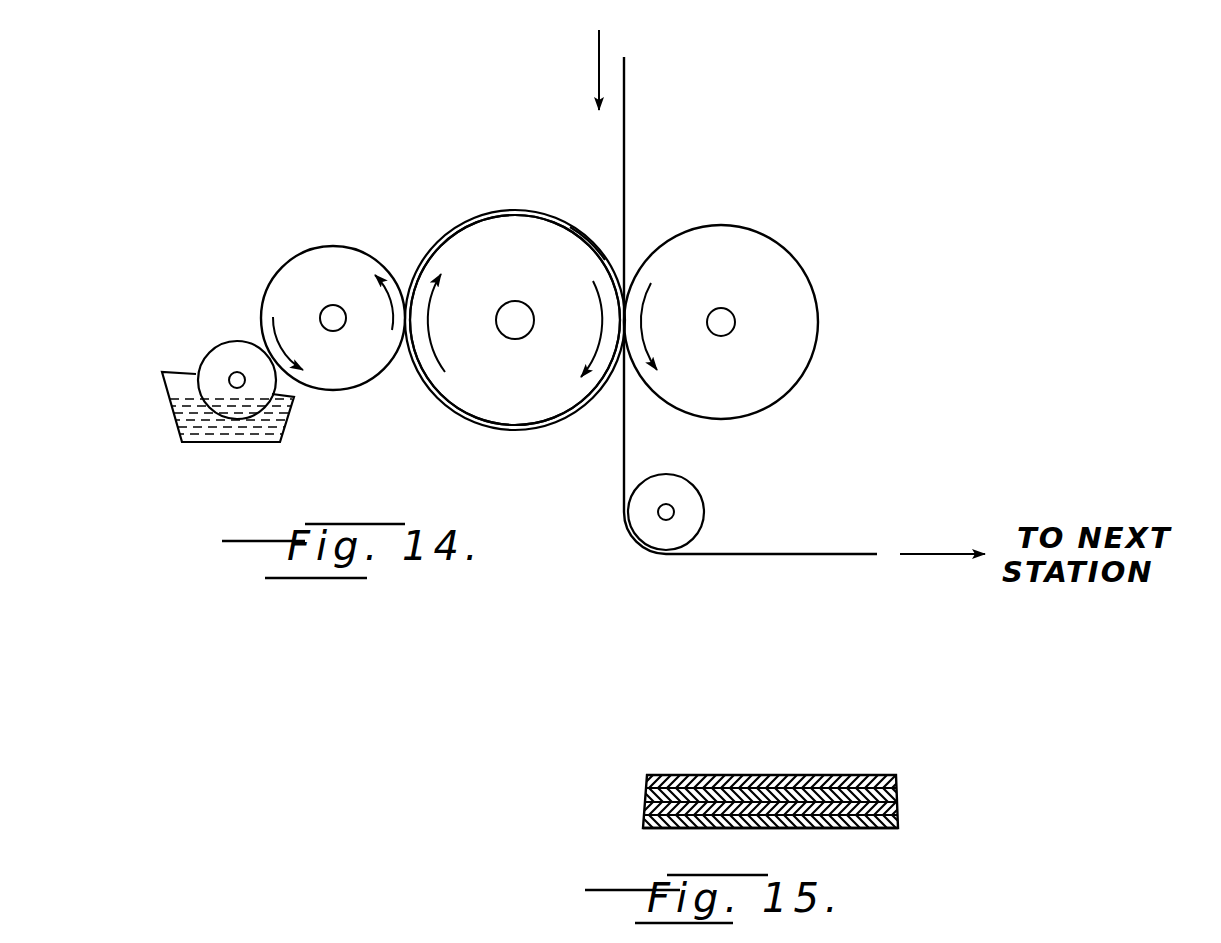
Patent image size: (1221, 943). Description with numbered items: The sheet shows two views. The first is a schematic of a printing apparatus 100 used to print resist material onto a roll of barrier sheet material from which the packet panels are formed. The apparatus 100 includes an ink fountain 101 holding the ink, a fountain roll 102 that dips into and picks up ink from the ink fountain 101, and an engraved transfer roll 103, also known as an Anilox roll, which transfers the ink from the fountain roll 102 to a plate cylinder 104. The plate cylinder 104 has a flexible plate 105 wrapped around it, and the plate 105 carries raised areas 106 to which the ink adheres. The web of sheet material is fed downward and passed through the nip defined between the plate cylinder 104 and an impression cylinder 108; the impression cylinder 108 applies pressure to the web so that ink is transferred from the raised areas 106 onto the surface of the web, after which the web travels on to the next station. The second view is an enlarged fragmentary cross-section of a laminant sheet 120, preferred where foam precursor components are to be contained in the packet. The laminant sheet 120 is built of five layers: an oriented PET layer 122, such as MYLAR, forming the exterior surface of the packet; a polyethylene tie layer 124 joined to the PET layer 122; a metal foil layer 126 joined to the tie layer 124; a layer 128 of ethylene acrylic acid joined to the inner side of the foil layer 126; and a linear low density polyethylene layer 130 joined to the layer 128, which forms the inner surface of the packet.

In FIG. 14, the printing apparatus 100 is at (407, 250).
In FIG. 14, the ink fountain 101 is at (173, 398).
In FIG. 14, the fountain roll 102 is at (217, 357).
In FIG. 14, the engraved transfer roll 103 is at (293, 270).
In FIG. 14, the plate cylinder 104 is at (495, 238).
In FIG. 14, the flexible plate 105 is at (587, 405).
In FIG. 14, the raised areas 106 is at (588, 230).
In FIG. 14, the impression cylinder 108 is at (785, 282).
In FIG. 14, the laminant sheet 120 is at (624, 127).
In FIG. 15, the laminant sheet 120 is at (853, 768).
In FIG. 15, the PET layer 122 is at (723, 773).
In FIG. 15, the polyethylene tie layer 124 is at (667, 790).
In FIG. 15, the metal foil layer 126 is at (647, 795).
In FIG. 15, the ethylene acrylic acid layer 128 is at (647, 805).
In FIG. 15, the linear low density polyethylene layer 130 is at (677, 830).